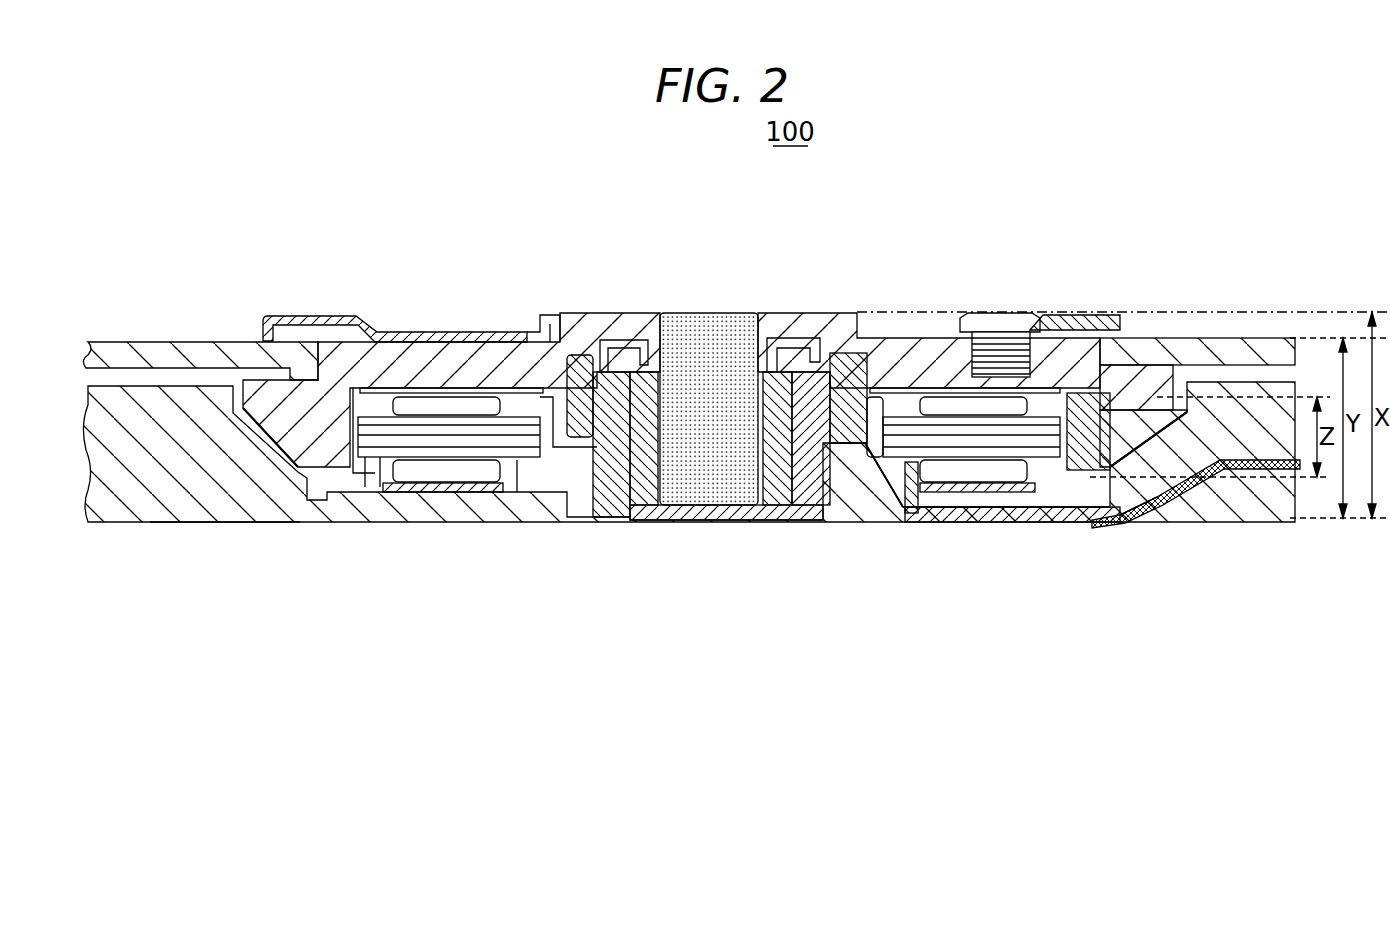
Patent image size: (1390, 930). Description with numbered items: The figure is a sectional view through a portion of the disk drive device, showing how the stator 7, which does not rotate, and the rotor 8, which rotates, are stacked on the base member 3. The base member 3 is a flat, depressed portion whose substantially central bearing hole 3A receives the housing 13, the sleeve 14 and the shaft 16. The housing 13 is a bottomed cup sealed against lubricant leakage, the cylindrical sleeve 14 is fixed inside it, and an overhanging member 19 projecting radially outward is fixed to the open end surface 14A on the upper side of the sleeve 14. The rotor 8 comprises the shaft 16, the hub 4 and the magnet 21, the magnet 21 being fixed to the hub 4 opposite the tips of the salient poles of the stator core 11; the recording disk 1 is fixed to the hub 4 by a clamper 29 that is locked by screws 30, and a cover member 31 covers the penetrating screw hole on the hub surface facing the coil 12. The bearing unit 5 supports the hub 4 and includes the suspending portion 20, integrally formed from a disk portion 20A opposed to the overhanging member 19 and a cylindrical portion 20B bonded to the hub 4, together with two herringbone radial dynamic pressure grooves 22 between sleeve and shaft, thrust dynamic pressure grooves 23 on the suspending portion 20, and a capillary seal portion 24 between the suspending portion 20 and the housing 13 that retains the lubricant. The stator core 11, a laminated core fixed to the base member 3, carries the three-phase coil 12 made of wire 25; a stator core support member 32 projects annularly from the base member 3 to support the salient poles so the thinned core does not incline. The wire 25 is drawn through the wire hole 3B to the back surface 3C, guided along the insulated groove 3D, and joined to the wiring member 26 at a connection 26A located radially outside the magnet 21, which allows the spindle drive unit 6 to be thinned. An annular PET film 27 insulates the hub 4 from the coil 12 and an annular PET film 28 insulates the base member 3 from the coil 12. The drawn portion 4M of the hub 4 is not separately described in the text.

The recording disk 1 is at (118, 345).
The base member 3 is at (118, 500).
The bearing hole 3A is at (838, 448).
The wire hole 3B is at (908, 480).
The back surface 3C is at (230, 522).
The groove 3D is at (1015, 507).
The hub 4 is at (400, 352).
The housing mounting portion 4M is at (655, 352).
The bearing unit 5 is at (688, 545).
The spindle drive unit 6 is at (356, 340).
The stator 7 is at (781, 546).
The rotor 8 is at (893, 282).
The stator core 11 is at (410, 440).
The coil 12 is at (508, 475).
The housing 13 is at (612, 480).
The sleeve 14 is at (650, 520).
The open end surface 14A is at (780, 372).
The shaft 16 is at (695, 322).
The overhanging member 19 is at (815, 326).
The suspending portion 20 is at (575, 360).
The disk portion 20A is at (612, 345).
The cylindrical portion 20B is at (540, 335).
The magnet 21 is at (1100, 440).
The radial dynamic pressure grooves 22 is at (741, 460).
The thrust dynamic pressure grooves 23 is at (827, 362).
The capillary seal portion 24 is at (868, 450).
The wire 25 is at (975, 520).
The wiring member 26 is at (1265, 470).
The connection 26A is at (1170, 492).
The PET film 27 is at (440, 395).
The PET film 28 is at (432, 490).
The clamper 29 is at (305, 318).
The screw 30 is at (990, 320).
The cover member 31 is at (1047, 330).
The stator core support member 32 is at (1060, 470).